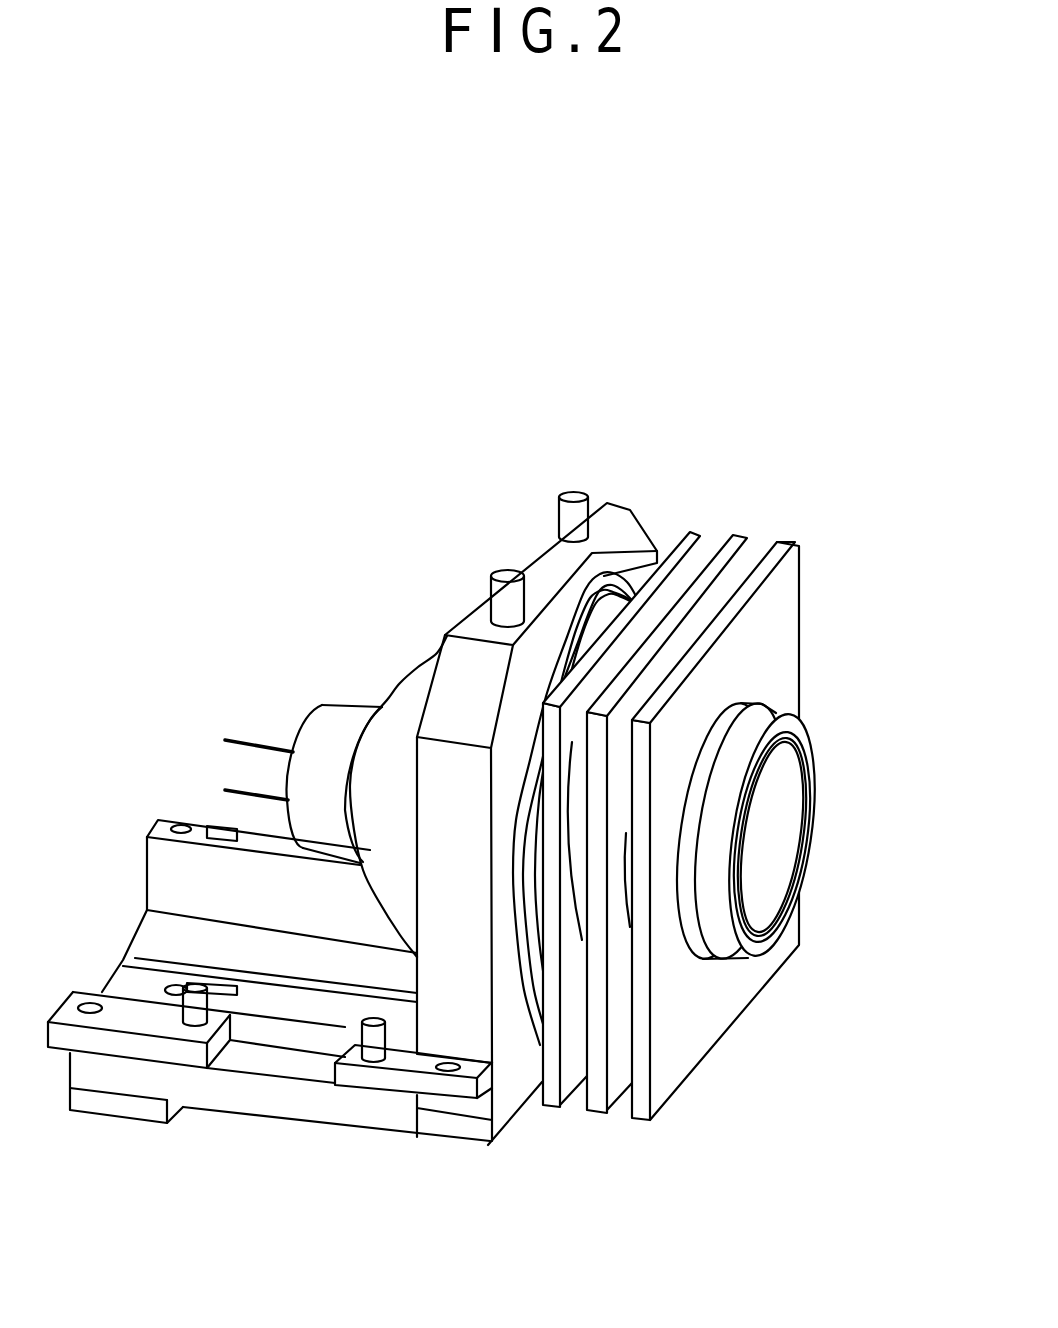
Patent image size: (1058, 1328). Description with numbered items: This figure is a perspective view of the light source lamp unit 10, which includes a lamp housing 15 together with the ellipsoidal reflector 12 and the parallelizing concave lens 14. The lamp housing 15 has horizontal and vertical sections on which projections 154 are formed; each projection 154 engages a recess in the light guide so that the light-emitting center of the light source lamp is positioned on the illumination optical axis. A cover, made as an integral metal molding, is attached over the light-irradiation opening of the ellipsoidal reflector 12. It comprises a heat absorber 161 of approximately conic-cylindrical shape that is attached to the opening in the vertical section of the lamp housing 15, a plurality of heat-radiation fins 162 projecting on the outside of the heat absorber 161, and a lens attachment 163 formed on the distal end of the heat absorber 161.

The light source lamp unit 10 is at (668, 414).
The ellipsoidal reflector 12 is at (418, 667).
The parallelizing concave lens 14 is at (803, 802).
The lamp housing 15 is at (312, 1113).
The projection 154 is at (572, 497).
The heat absorber 161 is at (580, 915).
The heat-radiation fins 162 is at (692, 530).
The lens attachment 163 is at (773, 953).